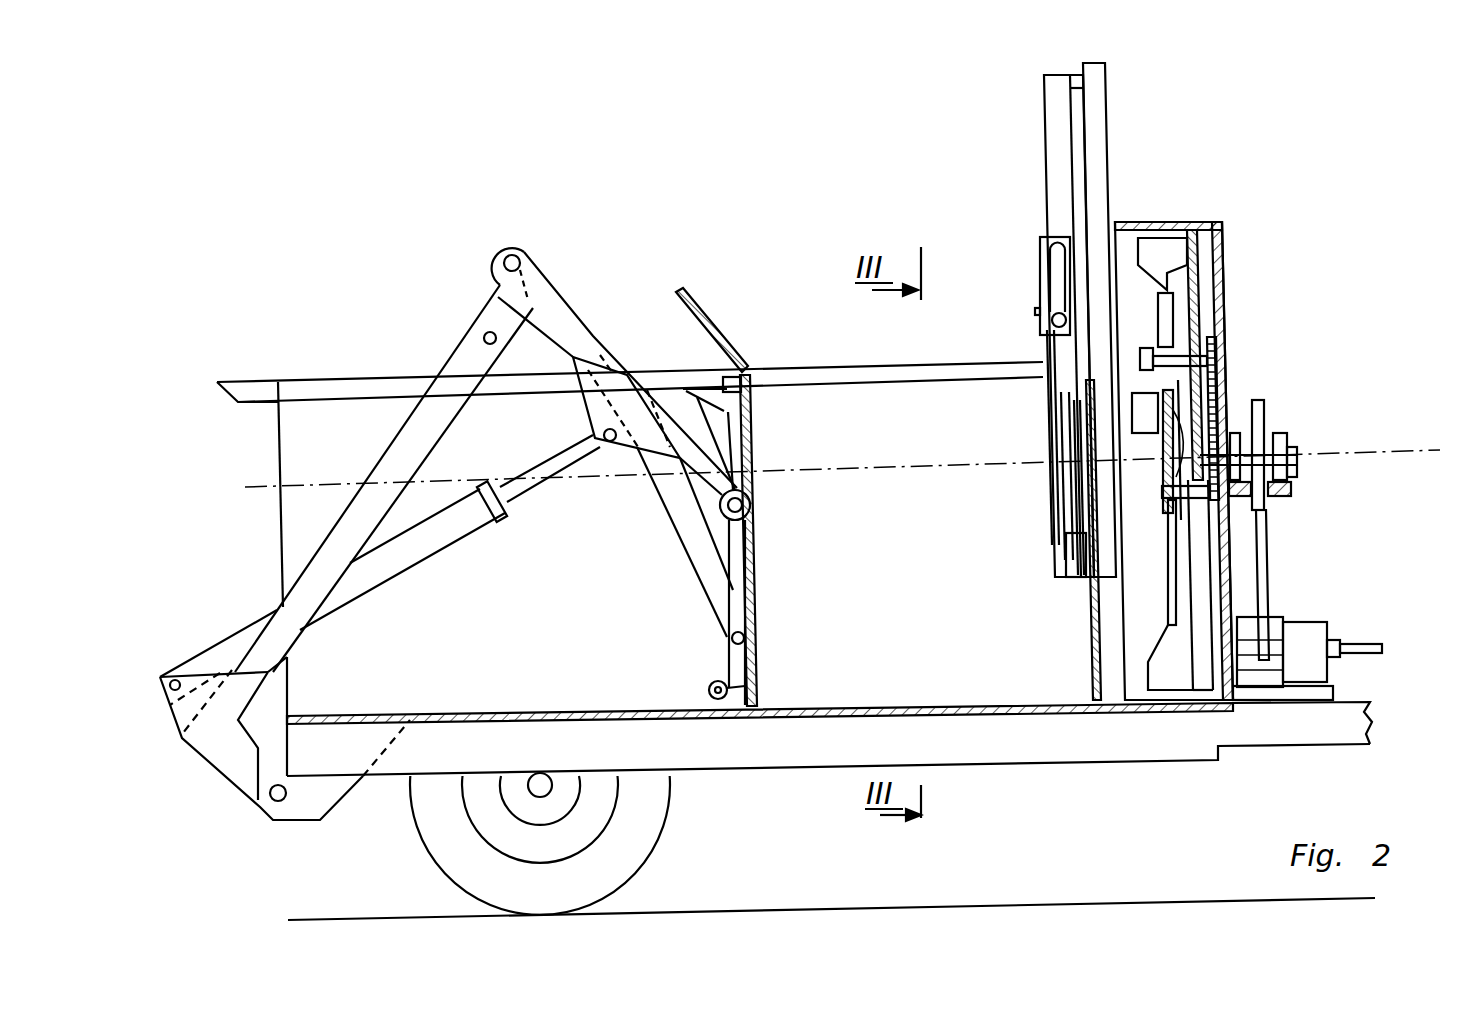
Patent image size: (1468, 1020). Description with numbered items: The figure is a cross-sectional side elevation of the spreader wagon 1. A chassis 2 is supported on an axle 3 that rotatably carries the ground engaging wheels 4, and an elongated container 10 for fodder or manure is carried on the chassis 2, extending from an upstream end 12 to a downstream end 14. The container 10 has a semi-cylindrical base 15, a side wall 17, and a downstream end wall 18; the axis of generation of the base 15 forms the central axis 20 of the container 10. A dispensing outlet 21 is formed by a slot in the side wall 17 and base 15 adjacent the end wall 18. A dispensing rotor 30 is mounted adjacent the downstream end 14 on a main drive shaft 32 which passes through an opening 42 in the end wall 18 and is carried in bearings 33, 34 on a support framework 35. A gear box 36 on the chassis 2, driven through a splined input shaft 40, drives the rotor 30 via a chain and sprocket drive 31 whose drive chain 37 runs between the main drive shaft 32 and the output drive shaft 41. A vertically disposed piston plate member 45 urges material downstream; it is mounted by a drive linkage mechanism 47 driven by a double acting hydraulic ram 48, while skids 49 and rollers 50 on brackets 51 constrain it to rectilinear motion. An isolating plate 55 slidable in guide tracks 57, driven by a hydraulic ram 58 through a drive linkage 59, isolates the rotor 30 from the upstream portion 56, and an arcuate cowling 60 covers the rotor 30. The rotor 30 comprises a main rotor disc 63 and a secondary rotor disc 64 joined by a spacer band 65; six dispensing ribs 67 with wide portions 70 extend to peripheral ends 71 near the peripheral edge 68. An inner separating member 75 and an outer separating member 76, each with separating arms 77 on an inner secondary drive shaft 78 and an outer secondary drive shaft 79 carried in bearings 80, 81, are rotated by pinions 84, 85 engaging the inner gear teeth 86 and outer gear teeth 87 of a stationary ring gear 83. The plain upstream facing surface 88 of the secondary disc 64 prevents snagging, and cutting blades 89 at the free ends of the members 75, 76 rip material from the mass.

The spreader wagon 1 is at (300, 280).
The chassis 2 is at (752, 752).
The axle 3 is at (546, 790).
The ground engaging wheels 4 is at (438, 835).
The container 10 is at (343, 408).
The upstream end 12 is at (298, 402).
The downstream end 14 is at (1197, 350).
The base 15 is at (845, 722).
The side wall 17 is at (822, 390).
The downstream end wall 18 is at (1218, 260).
The central axis 20 is at (880, 470).
The dispensing outlet 21 is at (1093, 605).
The dispensing rotor 30 is at (1198, 245).
The chain and sprocket drive 31 is at (1264, 545).
The main drive shaft 32 is at (1297, 458).
The bearing 33 is at (1265, 455).
The bearing 34 is at (1282, 440).
The support framework 35 is at (1283, 490).
The gear box 36 is at (1315, 650).
The drive chain 37 is at (1265, 600).
The splined input shaft 40 is at (1375, 652).
The output drive shaft 41 is at (1300, 630).
The opening 42 is at (1262, 448).
The piston plate member 45 is at (755, 598).
The drive linkage mechanism 47 is at (465, 362).
The double acting hydraulic ram 48 is at (462, 535).
The skids 49 is at (700, 391).
The rollers 50 is at (708, 686).
The brackets 51 is at (730, 660).
The isolating plate 55 is at (1090, 650).
The upstream portion 56 is at (893, 393).
The guide tracks 57 is at (1045, 145).
The double acting hydraulic ram 58 is at (1052, 268).
The drive linkage 59 is at (1047, 480).
The cowling 60 is at (1135, 222).
The main rotor disc 63 is at (1200, 300).
The secondary rotor disc 64 is at (1158, 320).
The spacer band 65 is at (1167, 283).
The dispensing ribs 67 is at (1197, 320).
The peripheral edge 68 is at (1185, 235).
The wide portions 70 is at (1160, 258).
The peripheral ends 71 is at (1170, 232).
The inner separating member 75 is at (1080, 520).
The outer separating member 76 is at (1048, 406).
The separating arms 77 is at (1073, 493).
The inner secondary drive shaft 78 is at (1172, 555).
The outer secondary drive shaft 79 is at (1212, 360).
The bearing 80 is at (1202, 335).
The bearing 81 is at (1148, 350).
The stationary ring gear 83 is at (1217, 410).
The pinion 84 is at (1230, 500).
The pinion 85 is at (1215, 380).
The inner gear teeth 86 is at (1222, 440).
The outer gear teeth 87 is at (1216, 372).
The upstream facing surface 88 is at (1165, 635).
The cutting blades 89 is at (1054, 328).